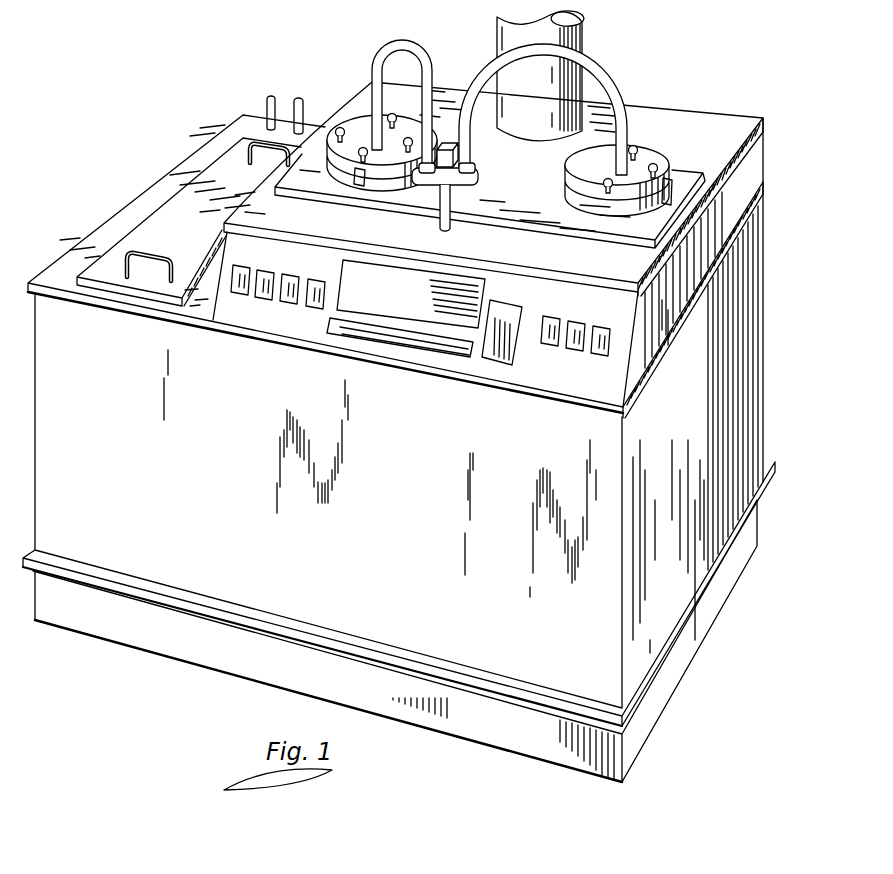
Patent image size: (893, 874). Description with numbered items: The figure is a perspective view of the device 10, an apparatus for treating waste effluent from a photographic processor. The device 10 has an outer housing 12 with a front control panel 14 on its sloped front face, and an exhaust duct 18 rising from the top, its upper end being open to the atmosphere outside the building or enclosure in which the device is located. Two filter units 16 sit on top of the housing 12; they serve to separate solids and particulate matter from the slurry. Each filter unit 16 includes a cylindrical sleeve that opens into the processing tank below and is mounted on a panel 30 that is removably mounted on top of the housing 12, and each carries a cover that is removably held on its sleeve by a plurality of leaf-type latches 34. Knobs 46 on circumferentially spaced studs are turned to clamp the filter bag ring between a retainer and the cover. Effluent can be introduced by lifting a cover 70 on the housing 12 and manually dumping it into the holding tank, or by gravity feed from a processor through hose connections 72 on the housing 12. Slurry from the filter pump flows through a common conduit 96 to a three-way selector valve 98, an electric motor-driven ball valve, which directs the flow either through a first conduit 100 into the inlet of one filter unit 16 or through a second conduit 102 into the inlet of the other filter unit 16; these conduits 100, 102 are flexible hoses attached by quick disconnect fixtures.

The device 10 is at (424, 392).
The outer housing 12 is at (717, 372).
The front control panel 14 is at (550, 363).
The filter units 16 is at (316, 180).
The exhaust duct 18 is at (145, 205).
The panel 30 is at (700, 188).
The leaf-type latches 34 is at (361, 186).
The knobs 46 is at (332, 129).
The cover 70 is at (222, 177).
The hose connections 72 is at (296, 98).
The common conduit 96 is at (440, 212).
The 3-way selector valve 98 is at (445, 146).
The first conduit 100 is at (405, 42).
The second conduit 102 is at (622, 100).